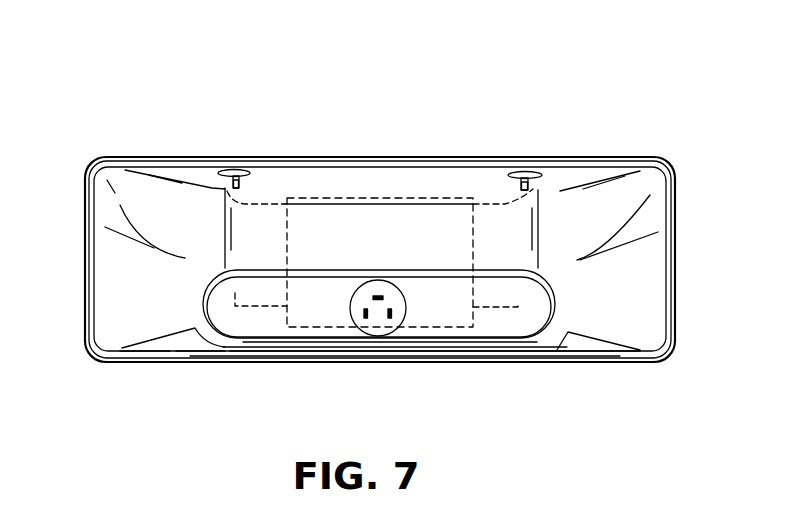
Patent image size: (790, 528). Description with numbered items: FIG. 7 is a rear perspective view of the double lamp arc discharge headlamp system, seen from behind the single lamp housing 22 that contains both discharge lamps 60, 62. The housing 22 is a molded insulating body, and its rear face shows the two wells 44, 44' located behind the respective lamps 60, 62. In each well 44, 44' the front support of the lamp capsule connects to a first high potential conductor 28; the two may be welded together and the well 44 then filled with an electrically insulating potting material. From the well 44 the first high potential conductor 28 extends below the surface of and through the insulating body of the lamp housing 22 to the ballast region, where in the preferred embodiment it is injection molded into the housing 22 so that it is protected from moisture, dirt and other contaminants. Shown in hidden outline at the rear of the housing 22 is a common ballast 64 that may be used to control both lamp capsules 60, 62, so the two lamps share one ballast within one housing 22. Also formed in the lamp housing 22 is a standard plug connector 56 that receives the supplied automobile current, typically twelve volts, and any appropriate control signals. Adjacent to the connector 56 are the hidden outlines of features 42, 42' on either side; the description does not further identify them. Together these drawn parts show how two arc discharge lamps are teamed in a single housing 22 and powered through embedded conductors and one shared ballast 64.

The lamp housing 22 is at (128, 364).
The first high potential conductor 28 is at (242, 183).
The terminal slot 42 is at (243, 349).
The terminal slot 42' is at (524, 358).
The well 44 is at (254, 151).
The fastener 44' is at (555, 156).
The plug connector 56 is at (400, 322).
The discharge lamp 60 is at (225, 140).
The discharge lamp 62 is at (532, 133).
The common ballast 64 is at (393, 199).